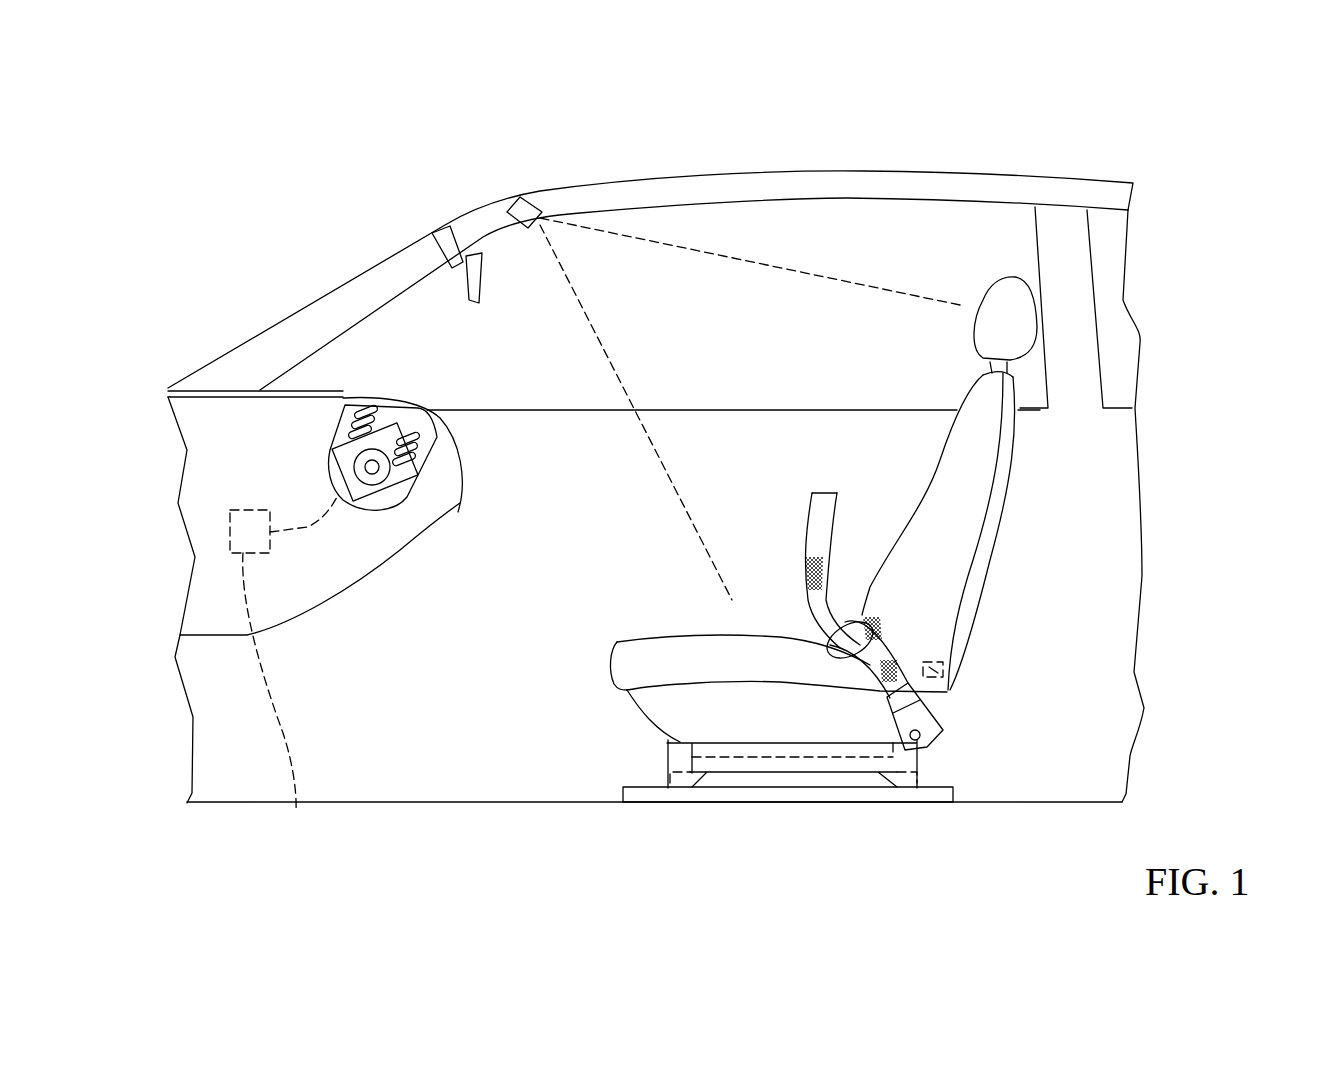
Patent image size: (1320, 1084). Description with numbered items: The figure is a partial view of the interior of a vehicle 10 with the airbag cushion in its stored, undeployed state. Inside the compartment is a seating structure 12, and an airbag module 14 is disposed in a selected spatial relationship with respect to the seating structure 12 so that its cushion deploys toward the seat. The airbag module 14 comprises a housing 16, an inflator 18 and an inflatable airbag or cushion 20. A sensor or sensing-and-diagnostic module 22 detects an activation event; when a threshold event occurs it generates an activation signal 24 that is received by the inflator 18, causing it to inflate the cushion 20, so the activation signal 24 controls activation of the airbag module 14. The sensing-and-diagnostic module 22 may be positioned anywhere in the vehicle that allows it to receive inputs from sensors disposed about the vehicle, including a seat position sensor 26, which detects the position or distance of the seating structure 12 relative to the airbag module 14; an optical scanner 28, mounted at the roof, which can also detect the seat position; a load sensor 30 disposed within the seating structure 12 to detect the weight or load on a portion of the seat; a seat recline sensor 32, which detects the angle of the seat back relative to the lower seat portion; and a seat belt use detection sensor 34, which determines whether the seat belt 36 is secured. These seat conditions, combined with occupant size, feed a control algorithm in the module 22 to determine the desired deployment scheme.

The vehicle 10 is at (1172, 275).
The seating structure 12 is at (997, 530).
The airbag module 14 is at (422, 474).
The housing 16 is at (333, 462).
The inflator 18 is at (387, 503).
The inflatable cushion 20 is at (348, 406).
The sensing-and-diagnostic module 22 is at (296, 812).
The activation signal 24 is at (312, 525).
The seat position sensor 26 is at (678, 777).
The optical scanner 28 is at (513, 195).
The load sensor 30 is at (900, 776).
The seat recline sensor 32 is at (947, 677).
The seat belt use detection sensor 34 is at (900, 712).
The seat belt 36 is at (867, 598).